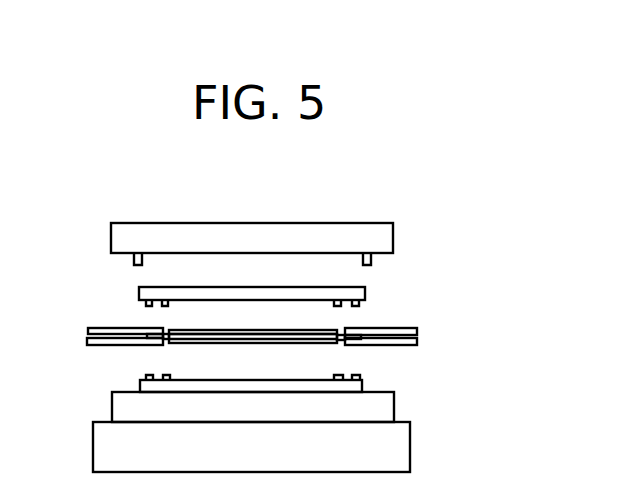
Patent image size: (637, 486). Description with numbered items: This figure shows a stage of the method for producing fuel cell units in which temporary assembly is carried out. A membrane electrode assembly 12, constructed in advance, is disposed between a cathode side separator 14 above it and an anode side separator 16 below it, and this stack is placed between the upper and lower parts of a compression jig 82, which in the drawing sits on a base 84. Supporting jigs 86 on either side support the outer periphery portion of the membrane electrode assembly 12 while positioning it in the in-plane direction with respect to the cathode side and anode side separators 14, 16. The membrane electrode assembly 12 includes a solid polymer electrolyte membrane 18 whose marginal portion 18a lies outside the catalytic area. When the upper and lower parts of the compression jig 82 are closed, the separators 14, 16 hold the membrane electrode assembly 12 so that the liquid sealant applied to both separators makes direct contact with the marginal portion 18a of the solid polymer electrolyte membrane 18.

The membrane electrode assembly 12 is at (286, 333).
The cathode side separator 14 is at (284, 298).
The anode side separator 16 is at (363, 384).
The solid polymer electrolyte membrane 18 is at (228, 340).
The marginal portion 18a is at (166, 342).
The compression jig 82 is at (393, 233).
The base 84 is at (410, 445).
The supporting jigs 86 is at (109, 346).